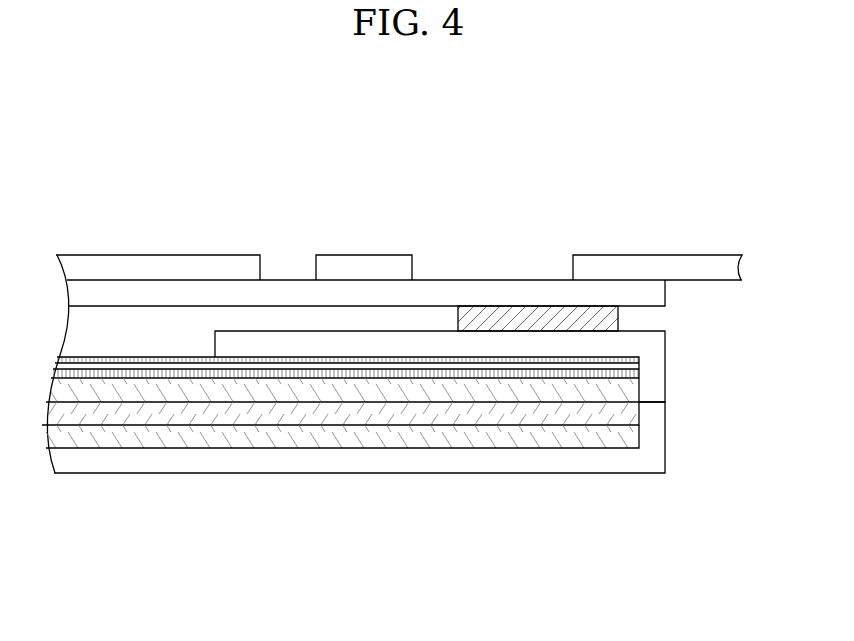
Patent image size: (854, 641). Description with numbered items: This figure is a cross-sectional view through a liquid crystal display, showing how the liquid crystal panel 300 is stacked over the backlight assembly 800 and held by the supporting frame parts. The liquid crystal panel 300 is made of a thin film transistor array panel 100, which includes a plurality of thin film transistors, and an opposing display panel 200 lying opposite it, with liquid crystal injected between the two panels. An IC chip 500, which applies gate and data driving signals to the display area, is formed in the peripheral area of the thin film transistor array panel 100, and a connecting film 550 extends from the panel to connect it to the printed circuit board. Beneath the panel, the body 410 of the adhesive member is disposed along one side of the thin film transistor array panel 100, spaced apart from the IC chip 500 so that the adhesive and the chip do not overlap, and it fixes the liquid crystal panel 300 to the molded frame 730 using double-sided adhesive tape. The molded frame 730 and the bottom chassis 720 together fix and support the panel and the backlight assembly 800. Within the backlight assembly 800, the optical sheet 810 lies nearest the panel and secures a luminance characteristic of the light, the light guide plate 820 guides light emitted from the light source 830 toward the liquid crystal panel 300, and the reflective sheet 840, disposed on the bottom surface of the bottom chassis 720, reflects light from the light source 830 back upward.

The liquid crystal panel 300 is at (243, 151).
The opposing display panel 200 is at (113, 268).
The thin film transistor array panel 100 is at (212, 295).
The molded frame 730 is at (287, 348).
The IC chip 500 is at (393, 268).
The body 410 is at (500, 320).
The connecting film 550 is at (687, 268).
The bottom chassis 720 is at (527, 460).
The backlight assembly 800 is at (392, 546).
The optical sheet 810 is at (165, 362).
The light guide plate 820 is at (265, 390).
The light source 830 is at (317, 415).
The reflective sheet 840 is at (362, 435).